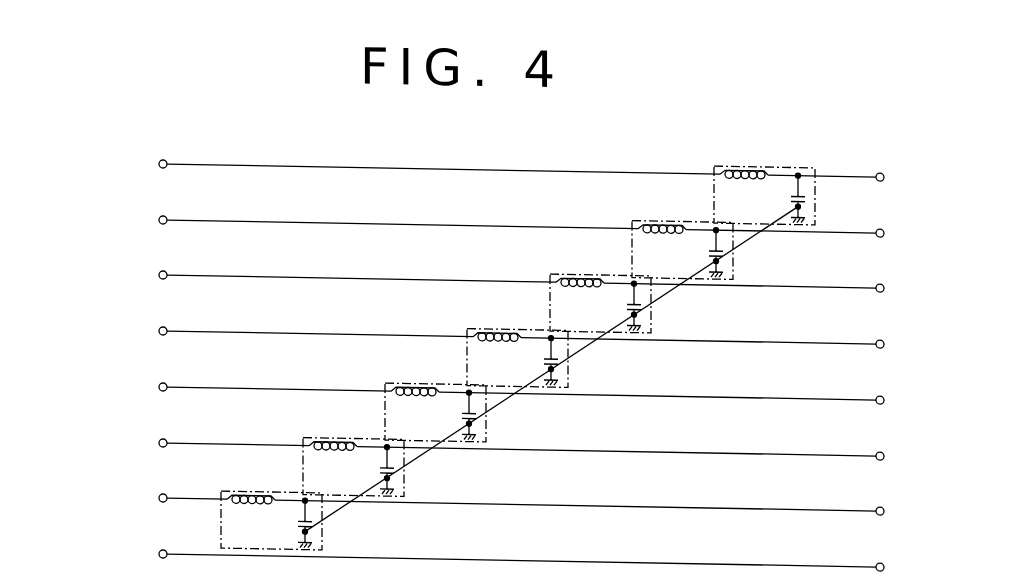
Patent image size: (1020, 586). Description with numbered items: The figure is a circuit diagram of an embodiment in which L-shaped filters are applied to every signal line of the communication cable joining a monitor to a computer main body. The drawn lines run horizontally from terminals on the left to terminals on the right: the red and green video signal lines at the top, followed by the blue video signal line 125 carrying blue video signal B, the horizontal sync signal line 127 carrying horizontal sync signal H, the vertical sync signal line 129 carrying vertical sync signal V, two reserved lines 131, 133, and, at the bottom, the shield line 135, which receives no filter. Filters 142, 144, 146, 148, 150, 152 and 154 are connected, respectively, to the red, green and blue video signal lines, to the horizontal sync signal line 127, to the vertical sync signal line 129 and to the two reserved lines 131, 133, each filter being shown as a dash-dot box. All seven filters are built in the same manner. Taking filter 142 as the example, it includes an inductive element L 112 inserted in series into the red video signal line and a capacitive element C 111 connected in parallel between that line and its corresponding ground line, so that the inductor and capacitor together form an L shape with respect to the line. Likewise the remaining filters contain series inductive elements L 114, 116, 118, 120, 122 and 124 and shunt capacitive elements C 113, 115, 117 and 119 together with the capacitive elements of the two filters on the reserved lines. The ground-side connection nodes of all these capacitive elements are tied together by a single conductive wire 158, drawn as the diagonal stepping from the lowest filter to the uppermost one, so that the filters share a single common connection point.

The blue video signal line 125 is at (511, 272).
The horizontal sync signal line 127 is at (510, 328).
The vertical sync signal line 129 is at (511, 384).
The reserved line 131 is at (456, 438).
The reserved line 133 is at (456, 493).
The shield line 135 is at (469, 549).
The filter 142 is at (754, 158).
The filter 144 is at (668, 214).
The filter 146 is at (590, 269).
The filter 148 is at (507, 325).
The filter 150 is at (425, 381).
The filter 152 is at (343, 437).
The filter 154 is at (268, 492).
The inductive element 112 is at (749, 193).
The inductive element 114 is at (667, 248).
The inductive element 116 is at (585, 301).
The inductive element 118 is at (502, 356).
The inductive element 120 is at (420, 410).
The inductive element 122 is at (338, 465).
The inductive element 124 is at (256, 518).
The capacitive element 111 is at (806, 188).
The capacitive element 113 is at (724, 244).
The capacitive element 115 is at (642, 299).
The capacitive element 117 is at (559, 355).
The capacitive element 119 is at (477, 411).
The conductive wire 158 is at (508, 392).